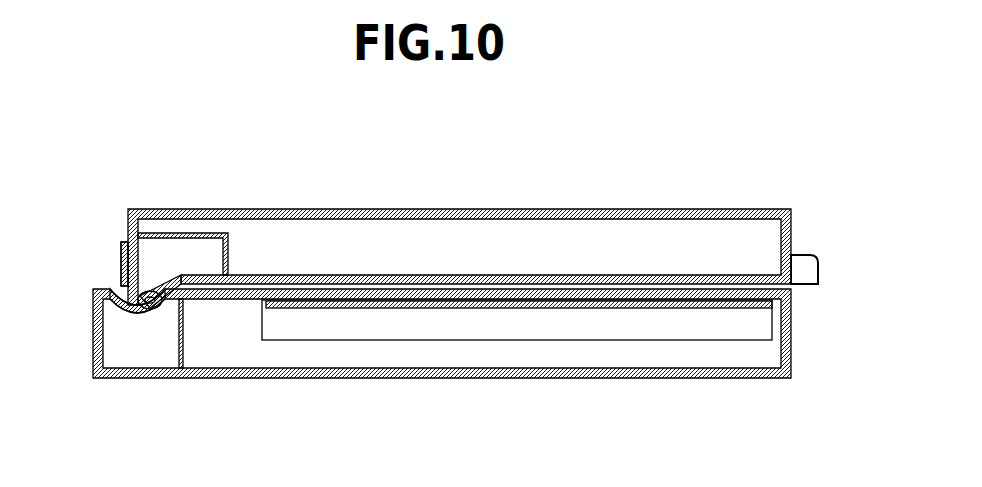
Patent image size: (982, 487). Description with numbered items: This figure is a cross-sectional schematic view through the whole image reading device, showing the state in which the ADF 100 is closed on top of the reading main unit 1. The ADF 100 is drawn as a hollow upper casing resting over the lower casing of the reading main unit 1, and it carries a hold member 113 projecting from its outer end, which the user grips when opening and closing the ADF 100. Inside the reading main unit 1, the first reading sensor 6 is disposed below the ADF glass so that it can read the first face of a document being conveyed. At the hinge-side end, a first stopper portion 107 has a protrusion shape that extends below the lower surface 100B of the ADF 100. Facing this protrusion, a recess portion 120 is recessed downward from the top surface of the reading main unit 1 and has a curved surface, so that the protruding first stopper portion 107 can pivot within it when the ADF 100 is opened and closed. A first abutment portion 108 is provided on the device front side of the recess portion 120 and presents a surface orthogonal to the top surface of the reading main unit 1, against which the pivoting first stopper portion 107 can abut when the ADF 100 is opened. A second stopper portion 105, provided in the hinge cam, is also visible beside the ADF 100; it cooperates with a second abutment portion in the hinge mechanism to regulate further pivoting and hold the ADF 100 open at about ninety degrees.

The reading main unit 1 is at (656, 378).
The first reading sensor 6 is at (357, 330).
The ADF 100 is at (425, 210).
The lower surface 100B is at (287, 287).
The second stopper portion 105 is at (122, 246).
The first stopper portion 107 is at (130, 315).
The first abutment portion 108 is at (147, 314).
The hold member 113 is at (800, 265).
The recess portion 120 is at (122, 285).